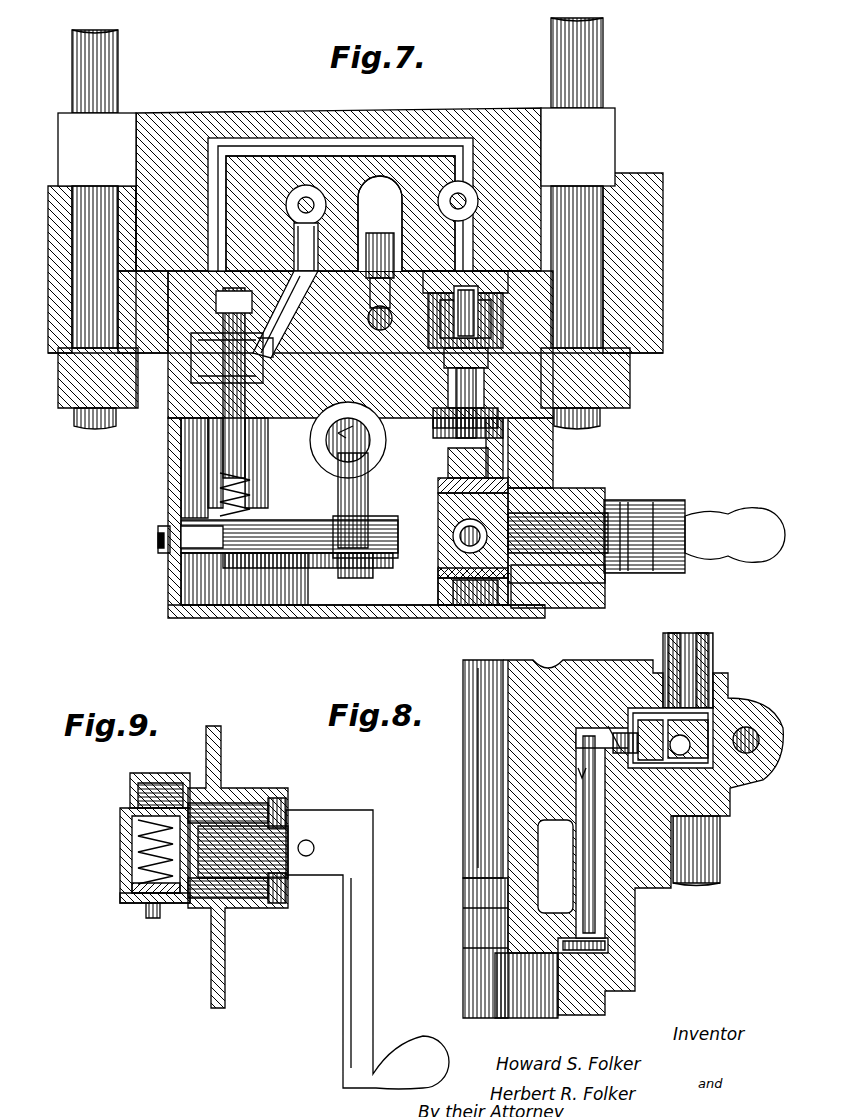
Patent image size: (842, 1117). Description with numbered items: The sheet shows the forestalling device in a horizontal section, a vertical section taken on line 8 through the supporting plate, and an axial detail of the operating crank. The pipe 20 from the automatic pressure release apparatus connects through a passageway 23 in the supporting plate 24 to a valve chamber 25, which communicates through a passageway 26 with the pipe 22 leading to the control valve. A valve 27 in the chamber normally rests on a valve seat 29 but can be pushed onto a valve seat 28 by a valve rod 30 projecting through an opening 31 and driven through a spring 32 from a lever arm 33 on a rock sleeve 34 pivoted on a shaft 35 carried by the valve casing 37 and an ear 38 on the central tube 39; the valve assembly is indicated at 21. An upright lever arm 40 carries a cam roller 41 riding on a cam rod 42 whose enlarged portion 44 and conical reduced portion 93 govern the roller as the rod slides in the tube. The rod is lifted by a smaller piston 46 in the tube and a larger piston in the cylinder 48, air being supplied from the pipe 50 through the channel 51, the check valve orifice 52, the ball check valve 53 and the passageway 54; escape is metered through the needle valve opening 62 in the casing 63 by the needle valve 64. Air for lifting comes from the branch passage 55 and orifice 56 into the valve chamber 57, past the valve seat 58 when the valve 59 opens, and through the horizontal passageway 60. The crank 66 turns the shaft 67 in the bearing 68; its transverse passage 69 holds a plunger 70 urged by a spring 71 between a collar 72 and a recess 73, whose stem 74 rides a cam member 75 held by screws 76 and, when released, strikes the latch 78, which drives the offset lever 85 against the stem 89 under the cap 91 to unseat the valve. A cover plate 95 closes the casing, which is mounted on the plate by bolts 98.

In FIG. 7, the section line 8 is at (365, 75).
In FIG. 7, the pipe 20 is at (296, 168).
In FIG. 7, the valve assembly 21 is at (118, 436).
In FIG. 7, the pipe 22 is at (452, 172).
In FIG. 8, the pipe 22 is at (712, 845).
In FIG. 7, the passageway 23 is at (306, 247).
In FIG. 7, the supporting plate 24 is at (232, 87).
In FIG. 8, the supporting plate 24 is at (742, 700).
In FIG. 7, the valve chamber 25 is at (234, 383).
In FIG. 7, the passageway 26 is at (338, 142).
In FIG. 8, the passageway 26 is at (742, 745).
In FIG. 7, the valve 27 is at (269, 342).
In FIG. 7, the valve seat 28 is at (227, 328).
In FIG. 7, the valve seat 29 is at (178, 375).
In FIG. 7, the valve rod 30 is at (200, 455).
In FIG. 7, the opening 31 is at (176, 432).
In FIG. 7, the spring 32 is at (212, 490).
In FIG. 7, the lever arm 33 is at (150, 520).
In FIG. 7, the rock sleeve 34 is at (289, 536).
In FIG. 7, the shaft 35 is at (150, 545).
In FIG. 7, the valve casing 37 is at (162, 580).
In FIG. 9, the valve casing 37 is at (213, 730).
In FIG. 7, the ear 38 is at (350, 575).
In FIG. 7, the tube 39 is at (305, 478).
In FIG. 7, the upright lever arm 40 is at (330, 555).
In FIG. 7, the cam roller 41 is at (353, 537).
In FIG. 7, the cam rod 42 is at (337, 440).
In FIG. 8, the cam rod 42 is at (455, 672).
In FIG. 8, the enlarged portion 44 is at (462, 740).
In FIG. 8, the smaller piston 46 is at (455, 883).
In FIG. 8, the cylinder 48 is at (575, 1005).
In FIG. 8, the pipe 50 is at (705, 635).
In FIG. 7, the channel 51 is at (372, 172).
In FIG. 8, the channel 51 is at (685, 747).
In FIG. 7, the check valve orifice 52 is at (372, 228).
In FIG. 8, the check valve orifice 52 is at (650, 752).
In FIG. 8, the ball check valve 53 is at (625, 745).
In FIG. 7, the passageway 54 is at (350, 300).
In FIG. 8, the passageway 54 is at (597, 870).
In FIG. 7, the branch passage 55 is at (455, 222).
In FIG. 7, the orifice 56 is at (460, 300).
In FIG. 7, the valve chamber 57 is at (470, 305).
In FIG. 7, the valve seat 58 is at (476, 340).
In FIG. 7, the valve 59 is at (478, 318).
In FIG. 7, the horizontal passageway 60 is at (470, 360).
In FIG. 8, the needle valve opening 62 is at (640, 720).
In FIG. 8, the casing 63 is at (688, 739).
In FIG. 8, the needle valve 64 is at (610, 720).
In FIG. 7, the crank 66 is at (668, 485).
In FIG. 9, the crank 66 is at (340, 952).
In FIG. 7, the shaft 67 is at (558, 533).
In FIG. 9, the shaft 67 is at (243, 852).
In FIG. 7, the bearing 68 is at (600, 483).
In FIG. 9, the bearing 68 is at (272, 790).
In FIG. 7, the transverse passage 69 is at (430, 565).
In FIG. 9, the transverse passage 69 is at (124, 830).
In FIG. 7, the plunger 70 is at (445, 530).
In FIG. 9, the plunger 70 is at (128, 855).
In FIG. 7, the spring 71 is at (475, 592).
In FIG. 9, the spring 71 is at (115, 810).
In FIG. 7, the collar 72 is at (430, 590).
In FIG. 9, the collar 72 is at (120, 898).
In FIG. 9, the recess 73 is at (124, 878).
In FIG. 9, the stem 74 is at (140, 908).
In FIG. 7, the cam member 75 is at (430, 500).
In FIG. 9, the cam member 75 is at (140, 765).
In FIG. 9, the screws 76 is at (245, 795).
In FIG. 7, the latch 78 is at (430, 478).
In FIG. 7, the offset lever 85 is at (478, 465).
In FIG. 7, the stem 89 is at (495, 420).
In FIG. 7, the cap 91 is at (480, 450).
In FIG. 8, the conical reduced portion 93 is at (470, 820).
In FIG. 7, the cover plate 95 is at (285, 612).
In FIG. 7, the bolts 98 is at (112, 80).